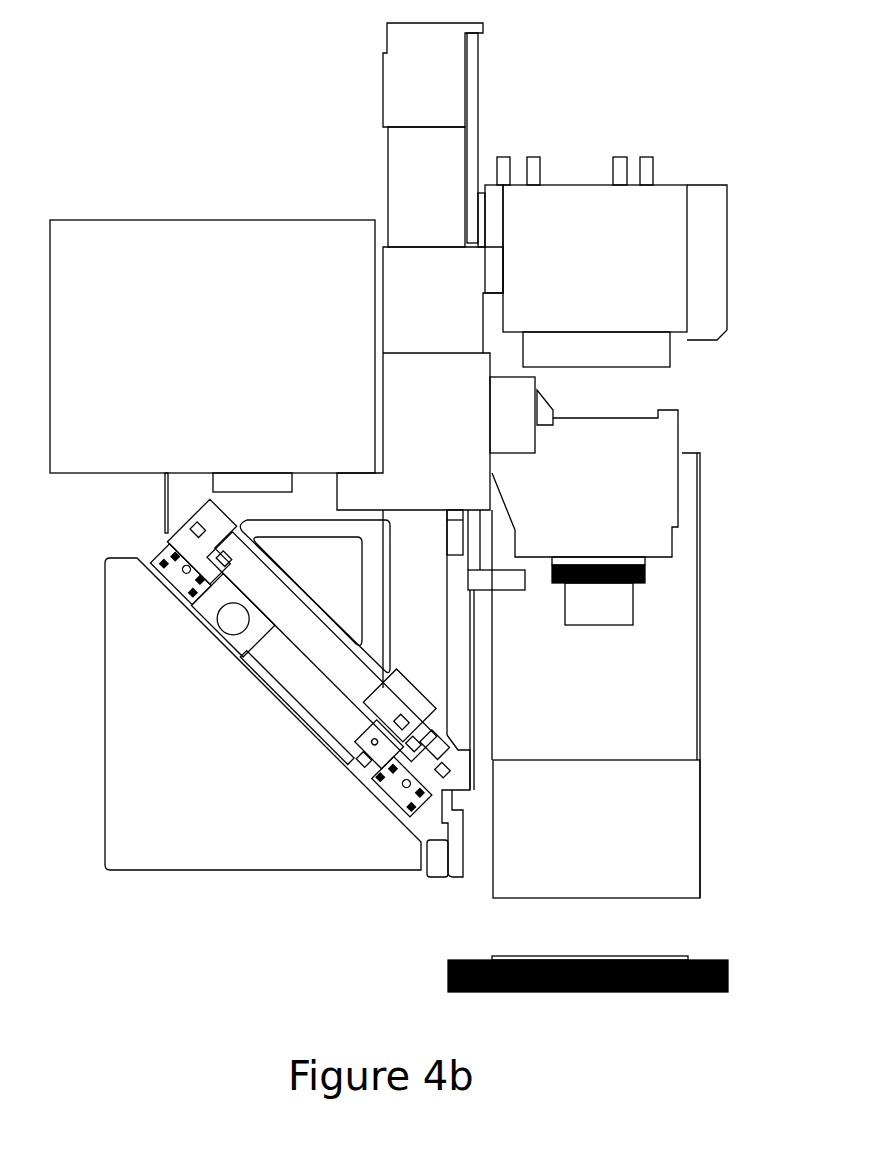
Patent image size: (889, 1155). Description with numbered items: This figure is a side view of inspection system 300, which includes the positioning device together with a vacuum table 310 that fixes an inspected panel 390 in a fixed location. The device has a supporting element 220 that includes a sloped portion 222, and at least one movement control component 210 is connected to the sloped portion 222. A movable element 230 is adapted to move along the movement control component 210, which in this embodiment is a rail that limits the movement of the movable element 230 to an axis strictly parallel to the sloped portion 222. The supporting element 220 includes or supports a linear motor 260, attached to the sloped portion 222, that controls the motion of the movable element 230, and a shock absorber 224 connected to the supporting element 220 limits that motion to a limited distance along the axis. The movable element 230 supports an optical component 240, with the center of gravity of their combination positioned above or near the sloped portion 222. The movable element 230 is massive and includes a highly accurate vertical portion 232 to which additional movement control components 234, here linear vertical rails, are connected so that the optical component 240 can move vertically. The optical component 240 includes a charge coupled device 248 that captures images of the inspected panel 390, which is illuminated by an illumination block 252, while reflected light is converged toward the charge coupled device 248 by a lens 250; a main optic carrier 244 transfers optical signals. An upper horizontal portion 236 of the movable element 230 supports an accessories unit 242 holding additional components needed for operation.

The movement control component 210 is at (160, 560).
The supporting element 220 is at (263, 714).
The sloped portion 222 is at (360, 778).
The shock absorber 224 is at (218, 622).
The movable element 230 is at (315, 596).
The vertical portion 232 is at (445, 645).
The additional movement control component 234 is at (480, 138).
The upper horizontal portion 236 is at (185, 474).
The optical component 240 is at (203, 185).
The accessories unit 242 is at (212, 356).
The main optic carrier 244 is at (434, 135).
The charge coupled device 248 is at (606, 262).
The lens 250 is at (585, 517).
The illumination block 252 is at (596, 829).
The linear motor 260 is at (295, 714).
The inspection system 300 is at (116, 1006).
The vacuum table 310 is at (728, 975).
The inspected panel 390 is at (660, 957).